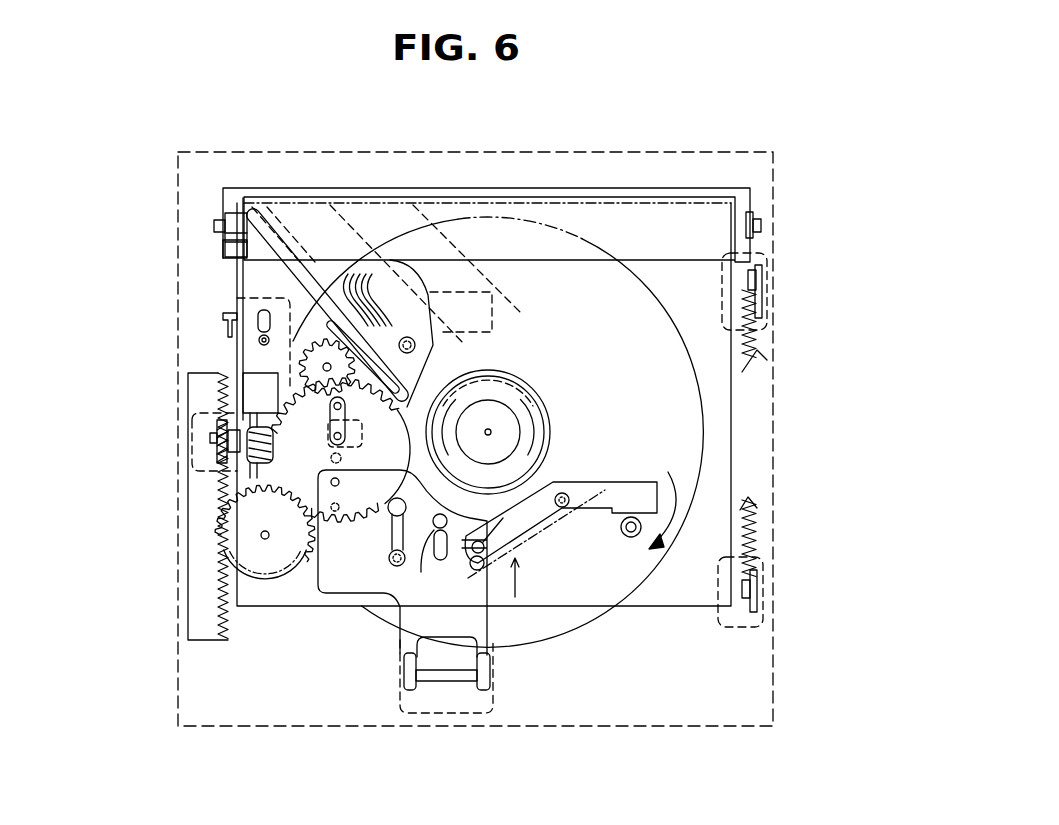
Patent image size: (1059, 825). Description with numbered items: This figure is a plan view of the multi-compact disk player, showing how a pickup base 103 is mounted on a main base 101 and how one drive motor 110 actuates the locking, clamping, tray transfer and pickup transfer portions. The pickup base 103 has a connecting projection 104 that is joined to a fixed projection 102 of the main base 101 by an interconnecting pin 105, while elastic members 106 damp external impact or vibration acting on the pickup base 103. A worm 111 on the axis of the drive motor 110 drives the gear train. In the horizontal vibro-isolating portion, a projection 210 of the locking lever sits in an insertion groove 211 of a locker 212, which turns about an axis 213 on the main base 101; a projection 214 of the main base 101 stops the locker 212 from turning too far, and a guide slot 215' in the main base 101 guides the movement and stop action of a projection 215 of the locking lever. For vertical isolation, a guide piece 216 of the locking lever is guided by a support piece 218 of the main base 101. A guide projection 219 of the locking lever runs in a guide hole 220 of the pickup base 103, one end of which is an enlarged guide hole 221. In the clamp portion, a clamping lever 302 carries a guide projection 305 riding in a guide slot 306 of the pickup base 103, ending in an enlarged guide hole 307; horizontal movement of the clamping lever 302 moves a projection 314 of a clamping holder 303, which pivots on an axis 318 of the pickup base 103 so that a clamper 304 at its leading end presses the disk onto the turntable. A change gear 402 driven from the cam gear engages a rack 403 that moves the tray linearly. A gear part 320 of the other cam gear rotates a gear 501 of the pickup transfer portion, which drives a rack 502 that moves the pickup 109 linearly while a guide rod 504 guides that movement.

The main base 101 is at (500, 152).
The fixed projection 102 is at (760, 270).
The pickup base 103 is at (731, 430).
The connecting projection 104 is at (557, 417).
The interconnecting pin 105 is at (751, 288).
The elastic members 106 is at (763, 343).
The pickup 109 is at (413, 320).
The drive motor 110 is at (253, 383).
The worm 111 is at (245, 480).
The projection 210 is at (488, 545).
The insertion groove 211 is at (490, 555).
The locker 212 is at (562, 495).
The axis 213 is at (563, 512).
The projection 214 is at (631, 537).
The projection 215 is at (372, 610).
The guide slot 215' is at (362, 570).
The guide piece 216 is at (403, 682).
The support piece 218 is at (445, 678).
The guide projection 219 is at (438, 545).
The guide hole 220 is at (428, 560).
The guide hole 221 is at (437, 520).
The clamping lever 302 is at (255, 297).
The clamping holder 303 is at (636, 217).
The clamper 304 is at (533, 447).
The guide projection 305 is at (253, 340).
The guide slot 306 is at (260, 345).
The guide hole 307 is at (263, 317).
The projection 314 is at (228, 247).
The axis 318 is at (244, 215).
The gear part 320 is at (316, 500).
The change gear 402 is at (262, 565).
The rack 403 is at (220, 563).
The gear 501 is at (300, 330).
The rack 502 is at (375, 400).
The guide rod 504 is at (261, 213).